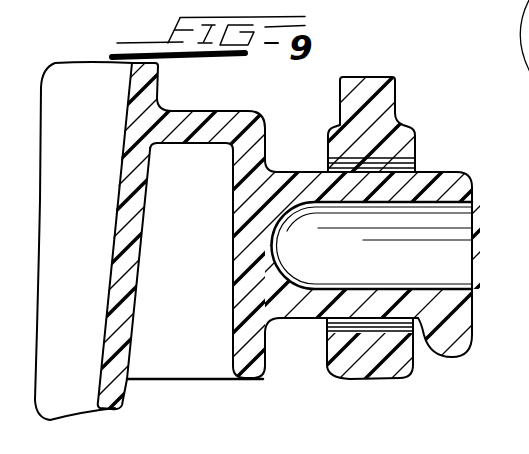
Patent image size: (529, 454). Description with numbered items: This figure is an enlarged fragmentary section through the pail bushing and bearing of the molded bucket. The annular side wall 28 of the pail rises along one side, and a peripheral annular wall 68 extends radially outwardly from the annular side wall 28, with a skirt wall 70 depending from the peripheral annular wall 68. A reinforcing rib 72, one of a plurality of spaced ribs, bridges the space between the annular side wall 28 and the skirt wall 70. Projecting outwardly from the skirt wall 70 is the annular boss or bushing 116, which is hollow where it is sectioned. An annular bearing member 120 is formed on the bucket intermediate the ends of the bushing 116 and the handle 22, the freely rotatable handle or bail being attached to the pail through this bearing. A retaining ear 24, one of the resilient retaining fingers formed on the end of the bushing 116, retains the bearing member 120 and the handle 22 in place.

The handle 22 is at (394, 103).
The retaining ear 24 is at (473, 334).
The annular side wall 28 is at (128, 282).
The peripheral annular wall 68 is at (183, 133).
The skirt wall 70 is at (253, 367).
The reinforcing rib 72 is at (172, 369).
The bushing 116 is at (325, 293).
The bearing member 120 is at (387, 367).